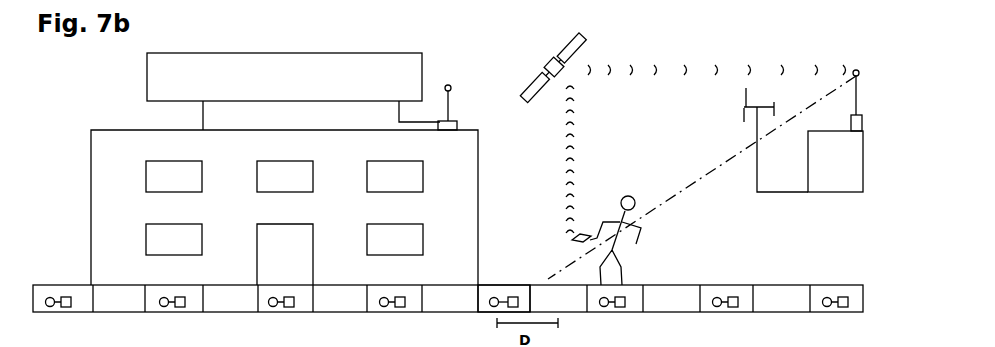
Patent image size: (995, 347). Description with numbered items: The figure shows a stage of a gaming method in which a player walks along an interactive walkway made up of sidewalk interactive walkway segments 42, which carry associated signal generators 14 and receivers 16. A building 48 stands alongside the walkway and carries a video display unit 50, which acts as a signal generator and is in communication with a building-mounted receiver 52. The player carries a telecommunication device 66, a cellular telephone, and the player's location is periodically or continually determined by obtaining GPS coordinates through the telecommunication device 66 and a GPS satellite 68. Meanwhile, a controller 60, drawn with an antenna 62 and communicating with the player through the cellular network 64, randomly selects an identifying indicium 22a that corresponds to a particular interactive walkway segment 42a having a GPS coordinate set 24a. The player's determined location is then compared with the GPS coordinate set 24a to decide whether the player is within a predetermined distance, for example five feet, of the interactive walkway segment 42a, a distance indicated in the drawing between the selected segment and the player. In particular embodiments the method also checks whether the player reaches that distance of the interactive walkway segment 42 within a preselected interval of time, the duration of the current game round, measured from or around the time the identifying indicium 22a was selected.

The signal generator 14 is at (273, 307).
The receiver 16 is at (290, 307).
The identifying indicium 22a is at (518, 302).
The GPS coordinate set 24a is at (502, 295).
The interactive walkway segment 42 is at (715, 288).
The interactive walkway segment 42a is at (484, 290).
The building 48 is at (480, 164).
The video display unit 50 is at (422, 72).
The building-mounted receiver 52 is at (452, 103).
The controller 60 is at (860, 197).
The antenna 62 is at (855, 96).
The cellular network 64 is at (760, 158).
The telecommunication device 66 is at (572, 239).
The GPS satellite 68 is at (582, 35).